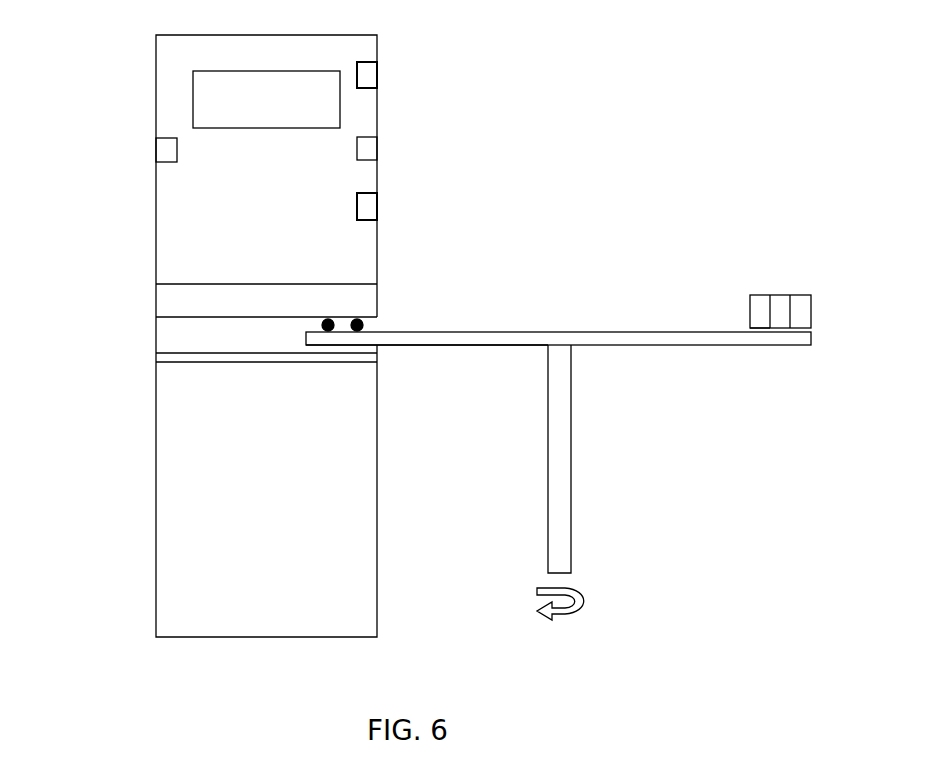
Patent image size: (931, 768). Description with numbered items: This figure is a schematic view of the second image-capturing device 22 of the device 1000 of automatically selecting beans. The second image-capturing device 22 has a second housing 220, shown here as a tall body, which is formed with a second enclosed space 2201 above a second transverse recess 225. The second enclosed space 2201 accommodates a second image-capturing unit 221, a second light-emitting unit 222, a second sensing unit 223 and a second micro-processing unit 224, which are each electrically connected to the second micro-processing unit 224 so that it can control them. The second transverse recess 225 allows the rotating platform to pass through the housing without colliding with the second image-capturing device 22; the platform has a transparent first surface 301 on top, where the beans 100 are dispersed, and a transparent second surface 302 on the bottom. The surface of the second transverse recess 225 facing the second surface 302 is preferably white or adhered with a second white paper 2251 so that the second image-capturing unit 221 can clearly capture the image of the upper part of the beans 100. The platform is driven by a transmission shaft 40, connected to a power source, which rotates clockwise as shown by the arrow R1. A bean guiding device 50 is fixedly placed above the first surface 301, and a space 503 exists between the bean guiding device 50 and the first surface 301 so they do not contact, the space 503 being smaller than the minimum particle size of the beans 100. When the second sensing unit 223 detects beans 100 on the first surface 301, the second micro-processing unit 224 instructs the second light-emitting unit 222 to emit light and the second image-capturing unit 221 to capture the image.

The device of automatically selecting beans 1000 is at (583, 153).
The second image-capturing device 22 is at (156, 502).
The second housing 220 is at (156, 443).
The second enclosed space 2201 is at (217, 193).
The second image-capturing unit 221 is at (193, 103).
The second light-emitting unit 222 is at (157, 153).
The second sensing unit 223 is at (377, 207).
The second micro-processing unit 224 is at (377, 75).
The second transverse recess 225 is at (172, 338).
The second white paper 2251 is at (156, 358).
The beans 100 is at (367, 325).
The first surface 301 is at (593, 332).
The second surface 302 is at (500, 347).
The transmission shaft 40 is at (571, 460).
The arrow R1 is at (560, 627).
The bean guiding device 50 is at (777, 297).
The space 503 is at (762, 328).